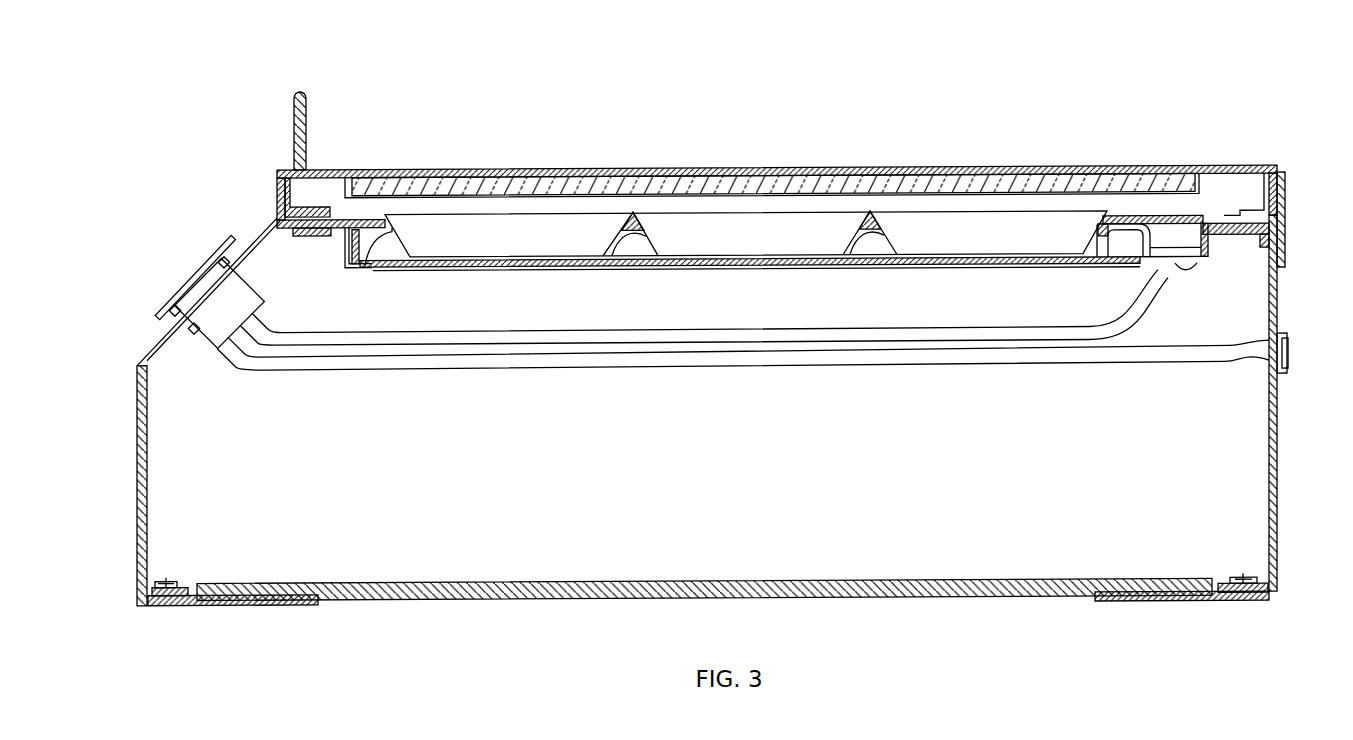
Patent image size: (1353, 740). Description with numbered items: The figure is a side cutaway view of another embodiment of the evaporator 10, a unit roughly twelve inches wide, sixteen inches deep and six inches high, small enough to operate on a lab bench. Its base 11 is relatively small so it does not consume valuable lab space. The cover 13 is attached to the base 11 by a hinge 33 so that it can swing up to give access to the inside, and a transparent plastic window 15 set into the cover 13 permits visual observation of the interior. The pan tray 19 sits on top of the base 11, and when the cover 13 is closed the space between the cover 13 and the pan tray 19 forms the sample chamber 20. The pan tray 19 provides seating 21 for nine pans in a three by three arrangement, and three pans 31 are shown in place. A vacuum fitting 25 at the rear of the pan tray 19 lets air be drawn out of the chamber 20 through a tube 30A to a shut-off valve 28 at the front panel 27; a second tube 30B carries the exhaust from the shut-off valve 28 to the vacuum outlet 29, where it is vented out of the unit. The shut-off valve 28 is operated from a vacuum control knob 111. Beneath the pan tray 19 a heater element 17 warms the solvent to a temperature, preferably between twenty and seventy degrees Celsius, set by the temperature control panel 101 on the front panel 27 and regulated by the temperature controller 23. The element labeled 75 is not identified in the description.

The evaporator 10 is at (697, 69).
The base 11 is at (973, 609).
The cover 13 is at (1234, 173).
The transparent plastic window 15 is at (909, 186).
The heater element 17 is at (1032, 273).
The pan tray 19 is at (368, 263).
The sample chamber 20 is at (360, 208).
The seating 21 is at (394, 238).
The temperature controller 23 is at (195, 330).
The vacuum fitting 25 is at (1187, 270).
The front panel 27 is at (247, 247).
The shut-off valve 28 is at (250, 290).
The vacuum outlet 29 is at (1288, 350).
The tube 30A is at (927, 331).
The second tube 30B is at (938, 370).
The pans 31 is at (608, 270).
The hinge 33 is at (1286, 183).
The antenna 75 is at (308, 96).
The temperature control panel 101 is at (173, 311).
The vacuum control knob 111 is at (205, 275).